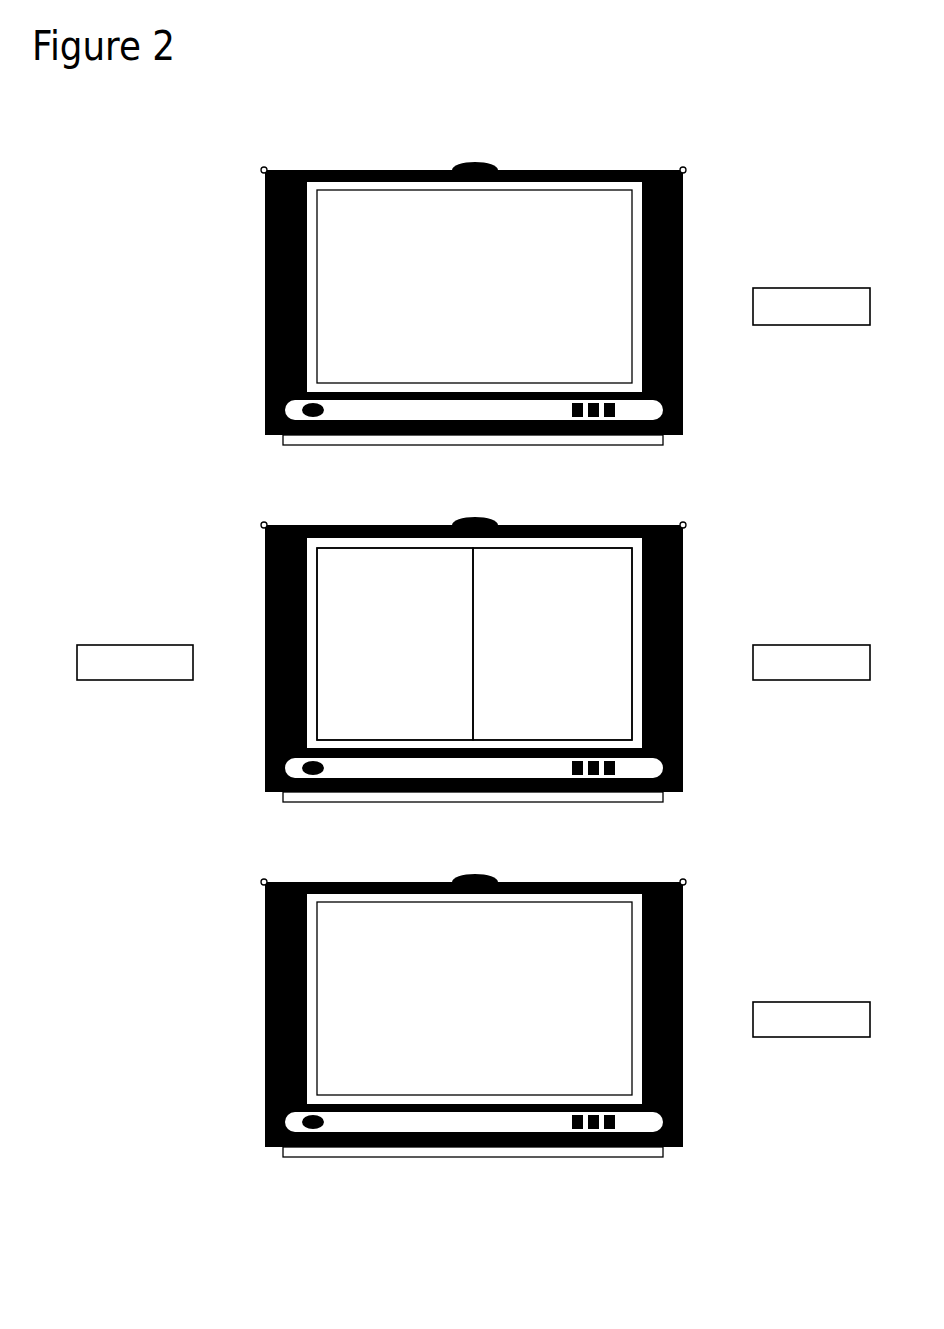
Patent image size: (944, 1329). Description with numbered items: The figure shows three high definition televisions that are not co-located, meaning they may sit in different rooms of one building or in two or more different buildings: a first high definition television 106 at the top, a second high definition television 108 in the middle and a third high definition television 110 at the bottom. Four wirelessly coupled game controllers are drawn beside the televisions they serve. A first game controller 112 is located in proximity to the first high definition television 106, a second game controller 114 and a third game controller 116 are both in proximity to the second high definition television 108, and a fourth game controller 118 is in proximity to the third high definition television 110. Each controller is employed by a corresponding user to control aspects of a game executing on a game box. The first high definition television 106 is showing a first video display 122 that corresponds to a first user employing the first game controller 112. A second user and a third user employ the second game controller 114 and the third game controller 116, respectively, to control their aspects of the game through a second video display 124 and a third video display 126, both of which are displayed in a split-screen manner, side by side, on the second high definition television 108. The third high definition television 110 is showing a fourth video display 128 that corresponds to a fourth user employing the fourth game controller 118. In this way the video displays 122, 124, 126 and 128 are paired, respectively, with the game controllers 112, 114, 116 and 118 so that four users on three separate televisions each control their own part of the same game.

The HDTV_1 106 is at (265, 283).
The HDTV_2 108 is at (265, 638).
The HDTV_3 110 is at (265, 995).
The GC_1 112 is at (858, 316).
The GC_2 114 is at (182, 673).
The GC_3 116 is at (858, 673).
The GC_4 118 is at (858, 1030).
The first video display (VD_1) 122 is at (490, 340).
The second video display (VD_2) 124 is at (412, 696).
The third video display (VD_3) 126 is at (569, 696).
The fourth video display (VD_4) 128 is at (490, 1052).